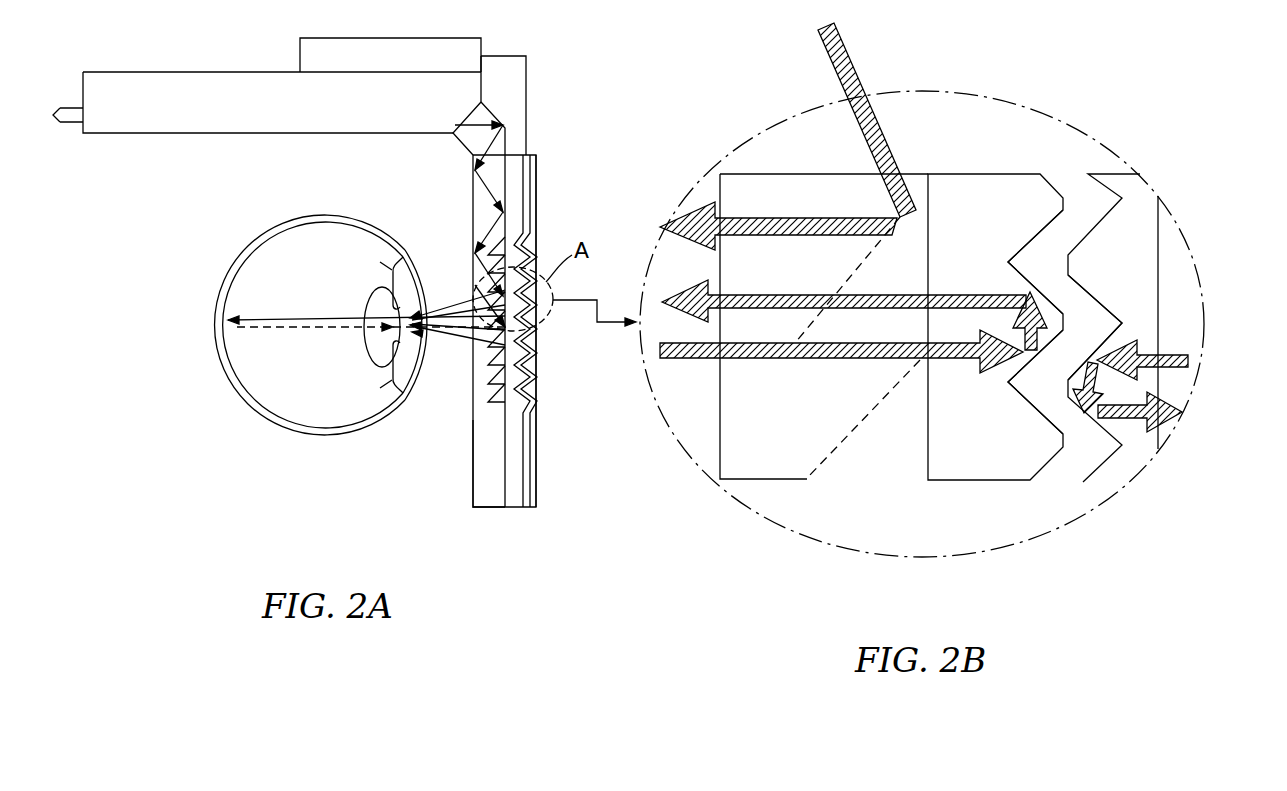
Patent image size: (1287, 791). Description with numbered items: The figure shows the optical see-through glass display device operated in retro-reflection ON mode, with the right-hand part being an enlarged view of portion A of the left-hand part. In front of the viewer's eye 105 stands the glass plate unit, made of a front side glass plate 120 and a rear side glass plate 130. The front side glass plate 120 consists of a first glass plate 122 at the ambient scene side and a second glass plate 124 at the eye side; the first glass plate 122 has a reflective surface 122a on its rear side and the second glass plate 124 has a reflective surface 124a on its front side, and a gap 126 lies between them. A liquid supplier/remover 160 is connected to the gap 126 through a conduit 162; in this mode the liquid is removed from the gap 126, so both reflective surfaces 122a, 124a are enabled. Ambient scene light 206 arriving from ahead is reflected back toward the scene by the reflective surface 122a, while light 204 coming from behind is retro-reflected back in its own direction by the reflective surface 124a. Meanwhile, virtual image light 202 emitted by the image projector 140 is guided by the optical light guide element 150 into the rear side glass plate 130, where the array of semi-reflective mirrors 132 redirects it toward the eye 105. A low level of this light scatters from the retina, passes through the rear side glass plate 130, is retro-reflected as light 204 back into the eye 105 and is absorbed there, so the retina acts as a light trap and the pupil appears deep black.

In FIG. 2A, the eye 105 is at (228, 278).
In FIG. 2A, the front side glass plate 120 is at (518, 178).
In FIG. 2B, the first glass plate 122 is at (1133, 190).
In FIG. 2B, the reflective surface 122a is at (1088, 293).
In FIG. 2B, the second glass plate 124 is at (1000, 190).
In FIG. 2B, the reflective surface 124a is at (1035, 415).
In FIG. 2B, the gap 126 is at (1075, 190).
In FIG. 2A, the rear side glass plate 130 is at (490, 473).
In FIG. 2B, the rear side glass plate 130 is at (765, 452).
In FIG. 2B, the semi-reflective mirrors 132 is at (846, 437).
In FIG. 2A, the image projector 140 is at (182, 133).
In FIG. 2A, the optical light guide element 150 is at (470, 138).
In FIG. 2A, the liquid supplier/remover 160 is at (300, 47).
In FIG. 2A, the conduit 162 is at (527, 93).
In FIG. 2B, the virtual image light 202 is at (820, 48).
In FIG. 2B, the retro-reflected light 204 is at (665, 355).
In FIG. 2B, the ambient scene light 206 is at (1187, 353).